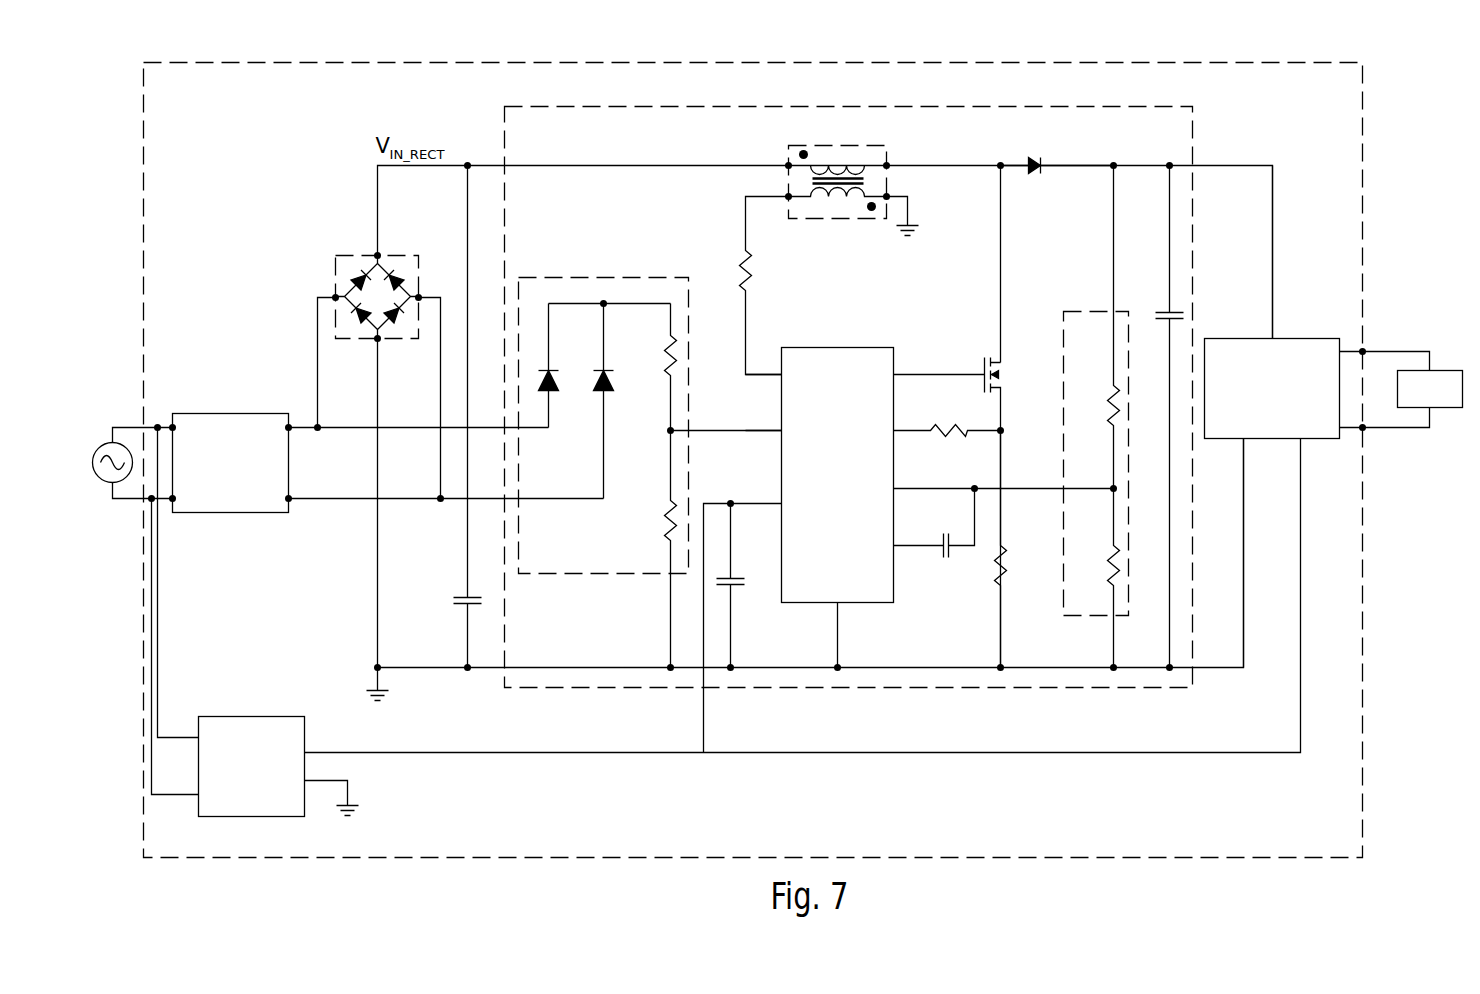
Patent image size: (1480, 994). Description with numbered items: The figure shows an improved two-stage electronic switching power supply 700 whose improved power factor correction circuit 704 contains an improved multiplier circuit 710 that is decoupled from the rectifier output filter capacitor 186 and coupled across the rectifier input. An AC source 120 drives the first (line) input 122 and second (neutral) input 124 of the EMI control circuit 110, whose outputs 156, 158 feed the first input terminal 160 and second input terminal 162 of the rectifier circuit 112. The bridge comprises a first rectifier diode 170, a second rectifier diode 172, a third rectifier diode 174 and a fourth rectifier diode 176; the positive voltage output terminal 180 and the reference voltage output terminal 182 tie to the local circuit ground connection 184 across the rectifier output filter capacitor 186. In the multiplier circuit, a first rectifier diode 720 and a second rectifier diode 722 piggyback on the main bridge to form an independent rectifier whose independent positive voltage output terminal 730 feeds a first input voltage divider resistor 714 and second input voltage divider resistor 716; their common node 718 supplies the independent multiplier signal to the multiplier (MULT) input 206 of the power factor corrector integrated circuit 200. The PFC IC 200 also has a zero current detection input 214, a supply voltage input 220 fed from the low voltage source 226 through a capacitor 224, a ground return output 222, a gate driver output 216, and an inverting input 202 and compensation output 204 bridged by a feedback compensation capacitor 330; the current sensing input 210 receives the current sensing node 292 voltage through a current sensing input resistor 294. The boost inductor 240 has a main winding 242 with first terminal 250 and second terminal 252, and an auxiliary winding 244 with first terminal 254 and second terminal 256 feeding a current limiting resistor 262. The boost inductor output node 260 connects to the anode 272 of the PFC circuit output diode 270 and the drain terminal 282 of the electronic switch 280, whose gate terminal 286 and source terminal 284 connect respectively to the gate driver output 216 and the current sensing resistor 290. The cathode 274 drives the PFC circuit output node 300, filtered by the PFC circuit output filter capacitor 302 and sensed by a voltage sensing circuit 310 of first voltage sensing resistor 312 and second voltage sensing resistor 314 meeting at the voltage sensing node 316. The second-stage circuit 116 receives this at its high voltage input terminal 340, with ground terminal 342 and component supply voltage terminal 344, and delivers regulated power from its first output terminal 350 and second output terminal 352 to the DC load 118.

The improved two-stage electronic switching power supply 700 is at (393, 62).
The improved power factor correction circuit 704 is at (625, 106).
The improved multiplier circuit 710 is at (604, 277).
The AC source 120 is at (100, 446).
The first (line) input 122 is at (172, 420).
The second (neutral) input 124 is at (172, 505).
The EMI control circuit 110 is at (204, 413).
The first output node of EMI circuit 156 is at (290, 420).
The second output node of EMI circuit 158 is at (288, 506).
The rectifier circuit 112 is at (377, 312).
The first input terminal 160 is at (335, 296).
The second input terminal 162 is at (418, 296).
The first rectifier diode 170 is at (357, 282).
The second rectifier diode 172 is at (398, 282).
The third rectifier diode 174 is at (360, 318).
The fourth rectifier diode 176 is at (395, 318).
The positive voltage output terminal 180 is at (378, 254).
The reference voltage output terminal 182 is at (378, 340).
The local circuit ground connection 184 is at (372, 694).
The rectifier output filter capacitor 186 is at (462, 596).
The first rectifier diode 720 is at (552, 392).
The second rectifier diode 722 is at (600, 392).
The independent positive voltage output terminal 730 is at (600, 304).
The first input voltage divider resistor 714 is at (664, 358).
The second input voltage divider resistor 716 is at (664, 518).
The common node 718 is at (676, 428).
The power factor corrector integrated circuit 200 is at (820, 347).
The zero current detection (ZCD) input 214 is at (781, 374).
The multiplier (MULT) input 206 is at (781, 430).
The supply voltage (VCC) input 220 is at (781, 504).
The ground return (GND) output 222 is at (840, 604).
The VCC capacitor 224 is at (738, 586).
The gate driver (GD) output 216 is at (896, 374).
The inverting (INV) input 202 is at (896, 490).
The compensation (COMP) output 204 is at (897, 547).
The feedback compensation capacitor 330 is at (949, 551).
The current sensing (CS) input 210 is at (936, 432).
The current sensing input resistor 294 is at (956, 432).
The current limiting resistor 262 is at (740, 268).
The boost inductor 240 is at (826, 158).
The main winding 242 is at (842, 162).
The auxiliary winding 244 is at (850, 200).
The first terminal 250 is at (786, 163).
The second terminal 252 is at (888, 163).
The first terminal 254 is at (888, 194).
The second terminal 256 is at (786, 194).
The anode 272 is at (1003, 165).
The boost inductor output node 260 is at (998, 170).
The PFC circuit output diode 270 is at (1038, 172).
The cathode 274 is at (1044, 164).
The PFC circuit output node 300 is at (1170, 163).
The electronic switch 280 is at (984, 376).
The drain terminal 282 is at (994, 360).
The source terminal 284 is at (993, 388).
The gate terminal 286 is at (998, 386).
The current sensing node 292 is at (1003, 430).
The current sensing resistor 290 is at (1004, 564).
The PFC circuit output filter capacitor 302 is at (1166, 313).
The voltage sensing circuit 310 is at (1066, 311).
The first voltage sensing resistor 312 is at (1108, 404).
The second voltage sensing resistor 314 is at (1108, 564).
The voltage sensing node 316 is at (1110, 487).
The second-stage circuit 116 is at (1260, 338).
The high voltage input terminal 340 is at (1280, 338).
The ground terminal 342 is at (1245, 440).
The component supply voltage terminal 344 is at (1302, 440).
The first output terminal 350 is at (1364, 350).
The second output terminal 352 is at (1364, 428).
The DC load 118 is at (1446, 370).
The low voltage source 226 is at (251, 747).